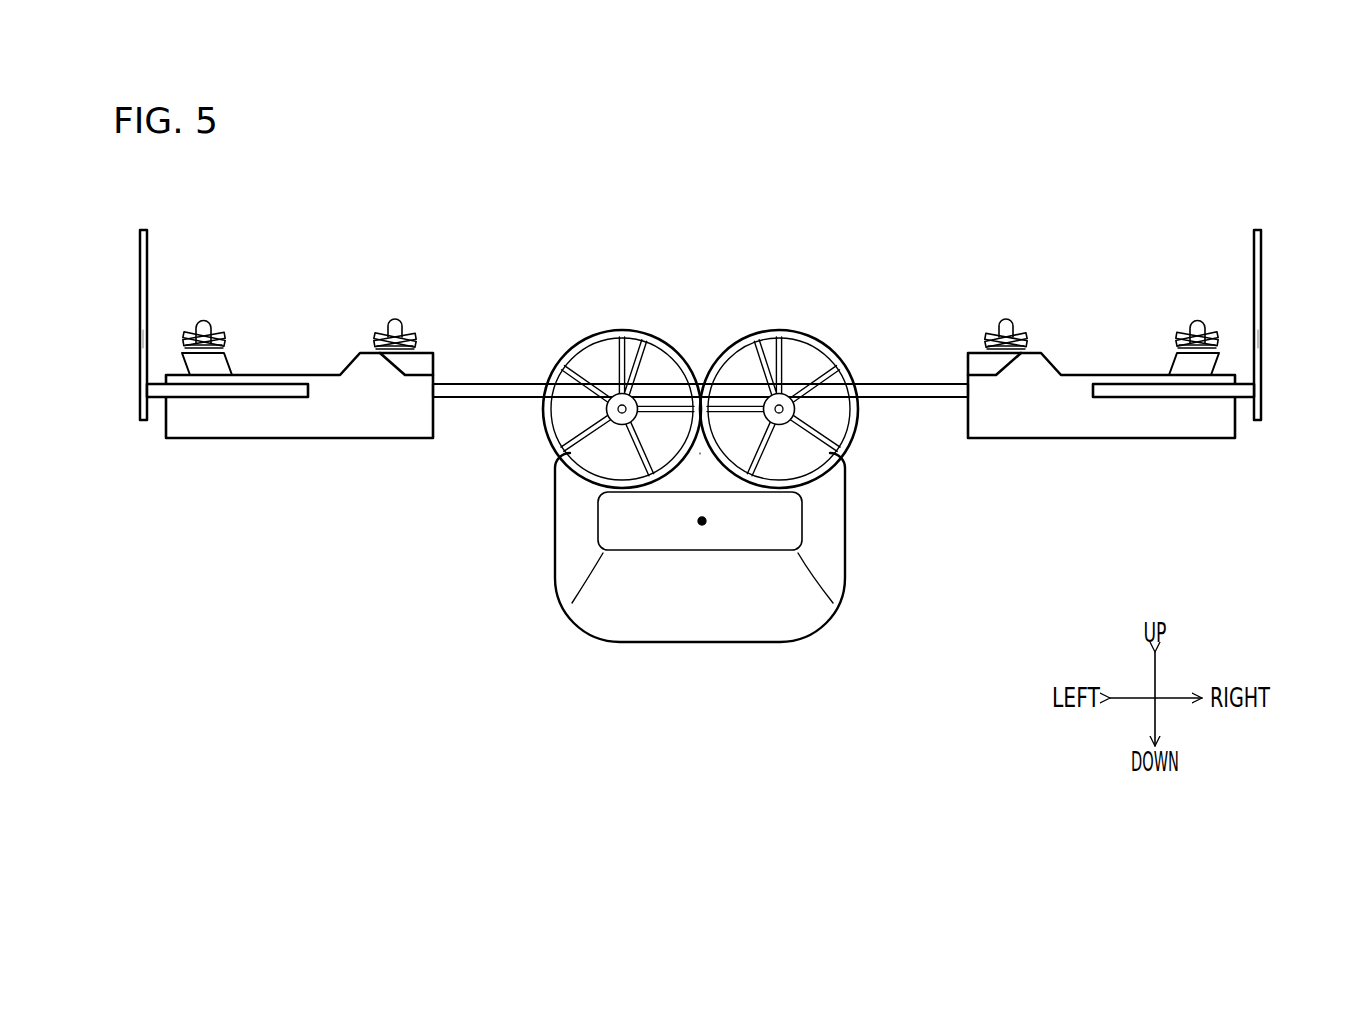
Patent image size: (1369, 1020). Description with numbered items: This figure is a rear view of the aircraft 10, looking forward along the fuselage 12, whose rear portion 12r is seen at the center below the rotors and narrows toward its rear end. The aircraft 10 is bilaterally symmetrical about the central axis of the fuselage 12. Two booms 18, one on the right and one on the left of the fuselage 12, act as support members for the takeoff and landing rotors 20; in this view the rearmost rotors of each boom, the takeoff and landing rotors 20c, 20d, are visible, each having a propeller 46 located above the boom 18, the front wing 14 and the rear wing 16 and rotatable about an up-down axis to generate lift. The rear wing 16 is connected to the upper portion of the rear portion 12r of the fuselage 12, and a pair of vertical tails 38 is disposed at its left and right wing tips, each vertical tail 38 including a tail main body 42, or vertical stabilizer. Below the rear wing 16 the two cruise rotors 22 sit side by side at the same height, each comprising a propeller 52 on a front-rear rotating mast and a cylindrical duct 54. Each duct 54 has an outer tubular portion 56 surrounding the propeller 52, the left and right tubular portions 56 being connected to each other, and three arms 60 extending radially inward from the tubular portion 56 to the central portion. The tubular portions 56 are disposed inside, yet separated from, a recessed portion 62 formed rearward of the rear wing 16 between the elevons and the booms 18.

The aircraft 10 is at (546, 205).
The fuselage 12 is at (738, 587).
The rear portion 12r is at (822, 557).
The front wing 14 is at (487, 400).
The rear wing 16 is at (190, 398).
The boom 18 is at (330, 439).
The takeoff and landing rotor 20 is at (700, 304).
The takeoff and landing rotor 20c is at (1197, 318).
The takeoff and landing rotor 20d is at (1005, 316).
The cruise rotor 22 is at (701, 364).
The vertical tail 38 is at (137, 279).
The tail main body 42 is at (140, 339).
The propeller 46 is at (222, 338).
The propeller 52 is at (584, 362).
The duct 54 is at (700, 364).
The tubular portion 56 is at (587, 283).
The arm 60 is at (617, 347).
The recessed portion 62 is at (700, 398).